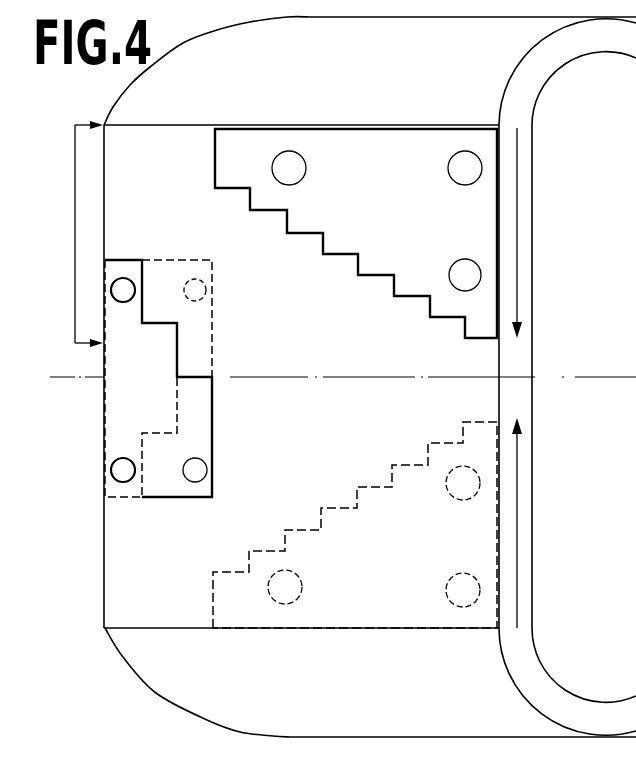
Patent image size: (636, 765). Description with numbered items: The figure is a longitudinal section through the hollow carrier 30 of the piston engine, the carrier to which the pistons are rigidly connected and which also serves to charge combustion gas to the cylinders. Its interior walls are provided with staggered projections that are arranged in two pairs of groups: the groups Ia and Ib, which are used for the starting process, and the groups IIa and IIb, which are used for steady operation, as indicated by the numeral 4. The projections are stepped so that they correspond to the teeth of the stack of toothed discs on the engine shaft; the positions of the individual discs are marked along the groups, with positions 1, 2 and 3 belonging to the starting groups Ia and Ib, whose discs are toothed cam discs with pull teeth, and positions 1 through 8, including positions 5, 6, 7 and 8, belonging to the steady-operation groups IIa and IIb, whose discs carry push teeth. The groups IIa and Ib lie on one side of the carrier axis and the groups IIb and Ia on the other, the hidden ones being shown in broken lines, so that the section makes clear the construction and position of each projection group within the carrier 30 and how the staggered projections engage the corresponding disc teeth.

The hollow carrier 30 is at (172, 682).
The steady operation projection groups indication 4 is at (343, 377).
The projection group IIa is at (356, 233).
The projection group IIb is at (355, 525).
The projection group Ia is at (156, 378).
The projection group Ib is at (158, 378).
The toothed disc position 1 is at (337, 271).
The toothed disc position 2 is at (300, 271).
The toothed disc position 3 is at (269, 271).
The toothed disc position 5 is at (340, 144).
The toothed disc position 6 is at (302, 144).
The toothed disc position 7 is at (270, 144).
The toothed disc position 8 is at (238, 144).